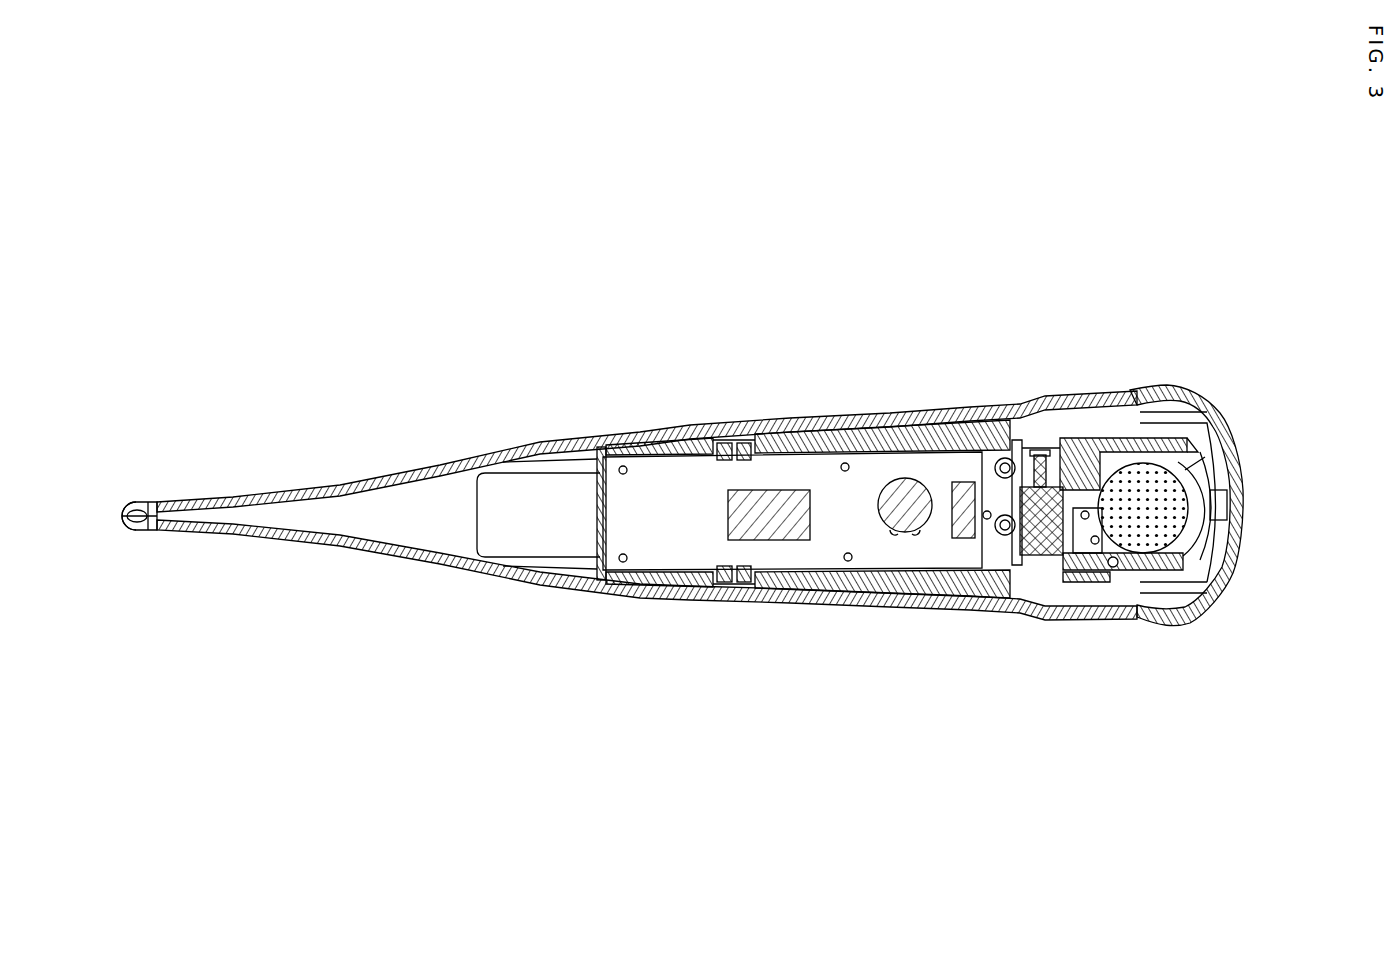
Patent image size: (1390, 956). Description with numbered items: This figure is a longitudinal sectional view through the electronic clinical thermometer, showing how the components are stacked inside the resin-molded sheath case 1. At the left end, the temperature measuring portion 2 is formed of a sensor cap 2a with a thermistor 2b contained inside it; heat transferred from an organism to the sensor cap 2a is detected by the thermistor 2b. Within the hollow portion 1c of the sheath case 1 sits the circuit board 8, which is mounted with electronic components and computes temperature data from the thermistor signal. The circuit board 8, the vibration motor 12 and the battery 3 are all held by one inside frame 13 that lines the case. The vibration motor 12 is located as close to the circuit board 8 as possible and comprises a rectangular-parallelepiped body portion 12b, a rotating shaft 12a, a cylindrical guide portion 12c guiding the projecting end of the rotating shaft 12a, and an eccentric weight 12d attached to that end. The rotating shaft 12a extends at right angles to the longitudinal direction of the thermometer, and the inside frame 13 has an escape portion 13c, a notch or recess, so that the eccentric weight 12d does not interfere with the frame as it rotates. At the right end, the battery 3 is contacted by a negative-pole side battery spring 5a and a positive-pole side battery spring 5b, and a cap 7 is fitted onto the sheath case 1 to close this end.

The sheath case 1 is at (357, 495).
The hollow portion 1c is at (568, 508).
The temperature measuring portion 2 is at (130, 533).
The sensor cap 2a is at (127, 507).
The thermistor 2b is at (135, 513).
The battery 3 is at (1243, 477).
The negative-pole side battery spring 5a is at (1105, 545).
The positive-pole side battery spring 5b is at (1245, 522).
The cap 7 is at (1232, 578).
The circuit board 8 is at (658, 493).
The vibration motor 12 is at (1030, 557).
The rotating shaft 12a is at (1003, 555).
The body portion 12b is at (1067, 570).
The cylindrical guide portion 12c is at (1030, 455).
The eccentric weight 12d is at (1065, 450).
The inside frame 13 is at (885, 437).
The escape portion 13c is at (1045, 447).